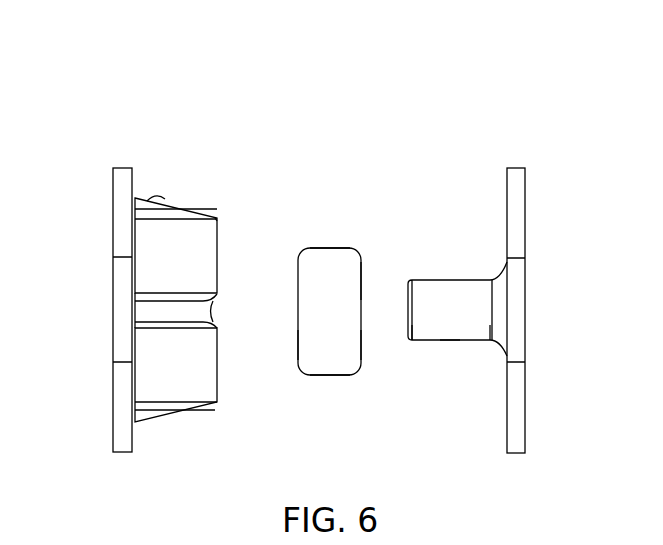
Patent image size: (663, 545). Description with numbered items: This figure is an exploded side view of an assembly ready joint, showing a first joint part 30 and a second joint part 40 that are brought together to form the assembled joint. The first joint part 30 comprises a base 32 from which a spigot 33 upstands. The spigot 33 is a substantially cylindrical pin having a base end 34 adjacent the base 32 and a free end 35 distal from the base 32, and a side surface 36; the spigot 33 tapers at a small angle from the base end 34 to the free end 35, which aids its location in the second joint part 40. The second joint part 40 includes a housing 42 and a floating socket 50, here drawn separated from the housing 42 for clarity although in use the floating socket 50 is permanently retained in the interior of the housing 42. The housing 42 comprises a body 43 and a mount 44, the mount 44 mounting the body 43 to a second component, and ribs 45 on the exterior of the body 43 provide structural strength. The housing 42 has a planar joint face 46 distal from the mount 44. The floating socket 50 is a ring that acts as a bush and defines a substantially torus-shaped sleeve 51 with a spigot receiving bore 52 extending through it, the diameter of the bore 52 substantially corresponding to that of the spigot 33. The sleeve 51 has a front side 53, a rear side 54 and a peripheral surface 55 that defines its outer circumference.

The first joint part 30 is at (485, 103).
The base 32 is at (515, 217).
The spigot 33 is at (468, 293).
The base end 34 is at (488, 332).
The free end 35 is at (423, 330).
The side surface 36 is at (450, 323).
The second joint part 40 is at (157, 100).
The housing 42 is at (182, 230).
The body 43 is at (157, 392).
The mount 44 is at (120, 400).
The ribs 45 is at (146, 313).
The joint face 46 is at (219, 228).
The floating socket 50 is at (325, 113).
The sleeve 51 is at (331, 368).
The spigot receiving bore 52 is at (368, 266).
The front side 53 is at (362, 353).
The rear side 54 is at (298, 352).
The peripheral surface 55 is at (324, 256).